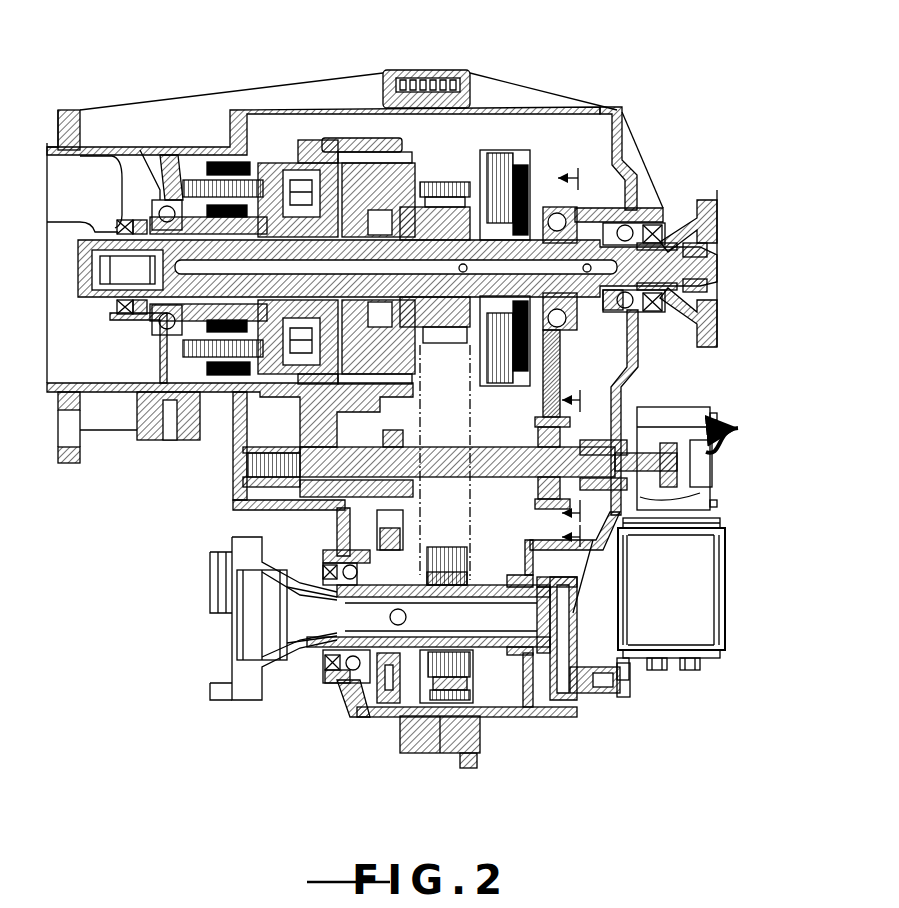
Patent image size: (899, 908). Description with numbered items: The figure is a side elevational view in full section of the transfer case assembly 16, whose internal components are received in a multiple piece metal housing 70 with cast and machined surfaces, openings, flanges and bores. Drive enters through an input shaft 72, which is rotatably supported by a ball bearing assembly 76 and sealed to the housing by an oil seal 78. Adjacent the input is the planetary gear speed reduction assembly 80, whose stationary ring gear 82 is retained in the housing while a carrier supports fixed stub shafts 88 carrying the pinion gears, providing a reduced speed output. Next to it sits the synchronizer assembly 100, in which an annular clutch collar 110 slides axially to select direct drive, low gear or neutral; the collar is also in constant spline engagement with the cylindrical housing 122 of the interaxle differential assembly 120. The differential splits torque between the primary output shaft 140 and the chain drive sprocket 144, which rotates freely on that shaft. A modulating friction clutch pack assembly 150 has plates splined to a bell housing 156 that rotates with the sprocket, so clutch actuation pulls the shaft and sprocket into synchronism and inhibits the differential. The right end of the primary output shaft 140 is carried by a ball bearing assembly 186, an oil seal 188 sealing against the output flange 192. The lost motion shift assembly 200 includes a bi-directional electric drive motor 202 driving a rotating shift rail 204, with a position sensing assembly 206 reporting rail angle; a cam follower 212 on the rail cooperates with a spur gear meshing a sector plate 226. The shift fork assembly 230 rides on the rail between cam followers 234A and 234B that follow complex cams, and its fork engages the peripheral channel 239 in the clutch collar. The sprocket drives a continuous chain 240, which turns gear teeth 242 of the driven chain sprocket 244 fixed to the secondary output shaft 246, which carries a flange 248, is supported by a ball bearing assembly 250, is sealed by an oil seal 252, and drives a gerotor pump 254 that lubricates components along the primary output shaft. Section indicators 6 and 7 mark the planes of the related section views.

The transfer case assembly 16 is at (562, 55).
The housing 70 is at (80, 108).
The input shaft 72 is at (80, 223).
The ball bearing assembly 76 is at (150, 205).
The oil seal 78 is at (112, 228).
The planetary gear speed reduction assembly 80 is at (215, 75).
The stationary ring gear 82 is at (225, 147).
The fixed stub shafts 88 is at (157, 345).
The synchronizer assembly 100 is at (312, 62).
The annular clutch collar 110 is at (352, 140).
The interaxle differential assembly 120 is at (392, 62).
The cylindrical housing 122 is at (383, 358).
The primary output shaft 140 is at (690, 268).
The chain drive sprocket 144 is at (445, 335).
The modulating friction clutch pack assembly 150 is at (568, 92).
The bell housing 156 is at (515, 150).
The ball bearing assembly 186 is at (618, 230).
The oil seal 188 is at (665, 225).
The output flange 192 is at (717, 192).
The lost motion shift assembly 200 is at (735, 520).
The bi-directional electric drive motor 202 is at (700, 600).
The shift rail 204 is at (490, 468).
The position sensing assembly 206 is at (700, 478).
The cam follower 212 is at (620, 428).
The sector plate 226 is at (555, 385).
The shift fork assembly 230 is at (215, 497).
The cam follower 234A is at (302, 505).
The cam follower 234B is at (405, 428).
The peripheral channel 239 is at (305, 150).
The continuous chain 240 is at (445, 182).
The gear teeth 242 is at (448, 550).
The driven chain sprocket 244 is at (365, 718).
The secondary output shaft 246 is at (327, 657).
The flange 248 is at (240, 700).
The ball bearing assembly 250 is at (340, 687).
The oil seal 252 is at (323, 667).
The gerotor pump 254 is at (383, 540).
The section line 6 is at (579, 450).
The section line 7 is at (577, 347).